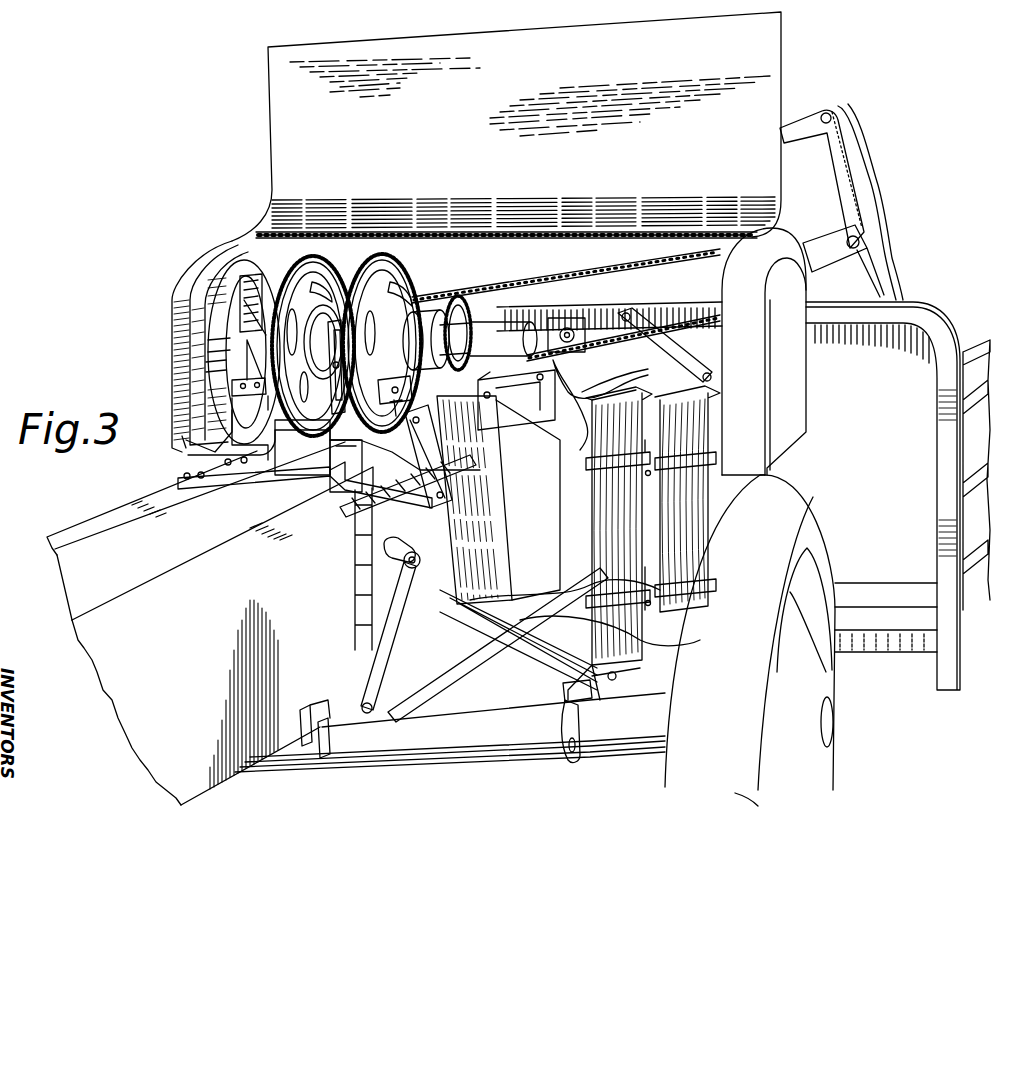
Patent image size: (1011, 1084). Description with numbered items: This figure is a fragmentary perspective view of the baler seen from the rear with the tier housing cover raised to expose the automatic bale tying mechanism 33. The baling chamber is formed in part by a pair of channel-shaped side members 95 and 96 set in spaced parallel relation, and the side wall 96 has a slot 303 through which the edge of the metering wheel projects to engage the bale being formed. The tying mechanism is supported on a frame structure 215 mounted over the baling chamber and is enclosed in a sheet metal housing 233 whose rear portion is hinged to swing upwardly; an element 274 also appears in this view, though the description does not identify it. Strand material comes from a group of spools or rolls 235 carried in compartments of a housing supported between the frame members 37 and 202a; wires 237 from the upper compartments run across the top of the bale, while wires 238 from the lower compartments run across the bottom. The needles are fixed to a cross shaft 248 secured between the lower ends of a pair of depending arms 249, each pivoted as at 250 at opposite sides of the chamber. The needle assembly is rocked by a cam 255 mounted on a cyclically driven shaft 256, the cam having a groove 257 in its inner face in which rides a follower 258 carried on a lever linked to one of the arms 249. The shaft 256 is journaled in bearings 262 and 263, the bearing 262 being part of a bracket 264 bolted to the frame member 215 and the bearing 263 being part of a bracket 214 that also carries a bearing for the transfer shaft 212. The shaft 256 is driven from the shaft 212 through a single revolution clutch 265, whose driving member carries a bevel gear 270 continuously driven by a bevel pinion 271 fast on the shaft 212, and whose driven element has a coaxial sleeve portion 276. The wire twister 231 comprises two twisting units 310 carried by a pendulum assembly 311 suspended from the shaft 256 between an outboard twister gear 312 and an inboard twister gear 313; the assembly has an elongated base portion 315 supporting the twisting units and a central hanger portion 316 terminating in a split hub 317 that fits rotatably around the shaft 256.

The sheet metal housing 233 is at (200, 252).
The cam 255 is at (212, 314).
The bearing 262 is at (232, 333).
The follower 258 is at (222, 360).
The bracket 264 is at (230, 388).
The groove 257 is at (248, 258).
The inboard twister gear 313 is at (304, 260).
The wire twister 231 is at (328, 266).
The split bearing or hub 317 is at (340, 324).
The automatic bale tying mechanism 33 is at (388, 258).
The outboard twister gear 312 is at (400, 256).
The single revolution clutch 265 is at (426, 318).
The shaft 212 is at (460, 318).
The bevel pinion 271 is at (460, 330).
The bearing 263 is at (480, 415).
The chain strip 274 is at (662, 236).
The frame member 202a is at (712, 328).
The cyclically driven shaft 256 is at (532, 334).
The wires 237 is at (609, 402).
The sleeve portion 276 is at (592, 436).
The spools or rolls 235 is at (660, 556).
The bevel gear 270 is at (478, 390).
The bracket 214 is at (506, 436).
The slot 303 is at (388, 528).
The pivot 250 is at (420, 562).
The depending arms 249 is at (388, 620).
The cross shaft 248 is at (350, 703).
The wires 238 is at (518, 600).
The frame member 37 is at (478, 726).
The channel-shaped side member 95 is at (95, 538).
The channel-shaped side member 96 is at (167, 592).
The frame structure 215 is at (242, 443).
The base portion 315 is at (182, 442).
The twisting units 310 is at (282, 445).
The pendulum assembly 311 is at (298, 462).
The hanger portion 316 is at (332, 455).